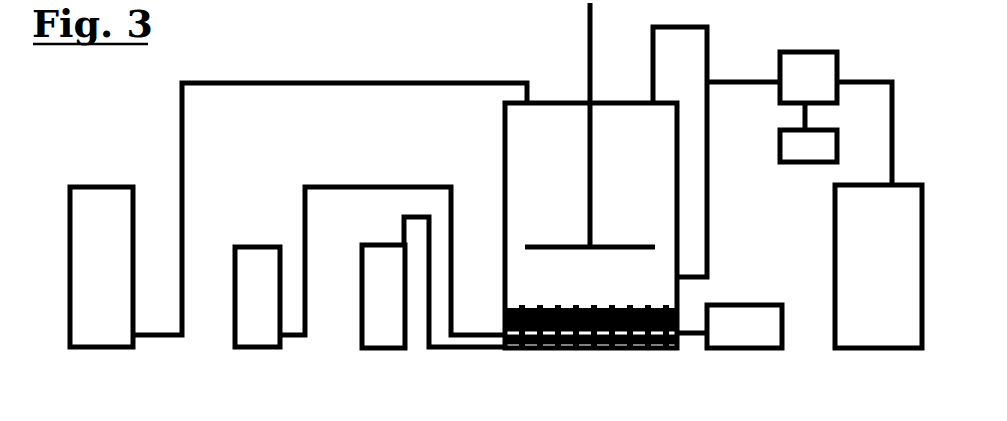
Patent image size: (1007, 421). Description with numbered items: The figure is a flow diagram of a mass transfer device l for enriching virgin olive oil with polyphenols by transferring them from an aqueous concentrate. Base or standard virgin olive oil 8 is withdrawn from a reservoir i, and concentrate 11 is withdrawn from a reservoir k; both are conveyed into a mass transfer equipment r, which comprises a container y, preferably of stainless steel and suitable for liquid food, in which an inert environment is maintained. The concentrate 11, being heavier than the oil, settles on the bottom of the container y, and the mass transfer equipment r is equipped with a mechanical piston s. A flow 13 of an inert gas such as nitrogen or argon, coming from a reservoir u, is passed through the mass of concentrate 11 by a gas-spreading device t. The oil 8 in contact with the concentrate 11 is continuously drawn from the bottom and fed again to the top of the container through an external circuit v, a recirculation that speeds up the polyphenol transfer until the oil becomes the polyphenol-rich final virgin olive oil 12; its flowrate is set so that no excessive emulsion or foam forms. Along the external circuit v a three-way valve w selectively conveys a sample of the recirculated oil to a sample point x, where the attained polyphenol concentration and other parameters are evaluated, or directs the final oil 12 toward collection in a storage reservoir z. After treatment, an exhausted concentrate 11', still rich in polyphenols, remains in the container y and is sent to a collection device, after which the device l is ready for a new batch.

The mass transfer device l is at (266, 56).
The base or standard virgin olive oil 8 is at (393, 80).
The concentrate 11 is at (477, 249).
The flow of inert gas 13 is at (447, 349).
The polyphenol-rich final virgin olive oil 12 is at (897, 121).
The exhausted concentrate 11' is at (726, 348).
The mass transfer equipment r is at (481, 105).
The mechanical piston s is at (588, 56).
The gas-spreading device t is at (558, 355).
The container y is at (503, 195).
The external circuit v is at (708, 222).
The three-way valve w is at (778, 66).
The sample point x is at (778, 143).
The storage reservoir z is at (827, 262).
The reservoir i is at (64, 320).
The reservoir k is at (231, 320).
The reservoir u is at (357, 320).